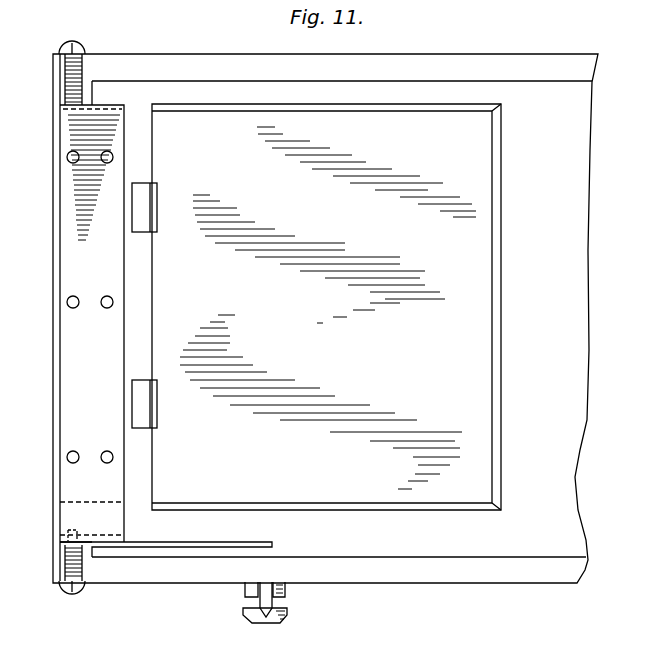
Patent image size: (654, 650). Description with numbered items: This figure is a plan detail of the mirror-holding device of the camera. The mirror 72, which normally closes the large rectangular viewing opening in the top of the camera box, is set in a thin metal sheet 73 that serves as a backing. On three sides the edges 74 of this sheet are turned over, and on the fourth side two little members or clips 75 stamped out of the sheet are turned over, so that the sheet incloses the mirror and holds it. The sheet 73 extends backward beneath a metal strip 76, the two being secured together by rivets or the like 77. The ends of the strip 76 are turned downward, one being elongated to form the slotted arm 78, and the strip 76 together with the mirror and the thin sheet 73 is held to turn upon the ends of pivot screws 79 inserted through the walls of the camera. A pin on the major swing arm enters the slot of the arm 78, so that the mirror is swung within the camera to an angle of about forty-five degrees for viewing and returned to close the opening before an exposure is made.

The mirror 72 is at (328, 308).
The thin metal sheet 73 is at (493, 433).
The edges 74 is at (287, 508).
The clips 75 is at (157, 198).
The metal strip 76 is at (66, 345).
The rivets 77 is at (101, 161).
The slotted arm 78 is at (222, 548).
The pivot screws 79 is at (78, 80).